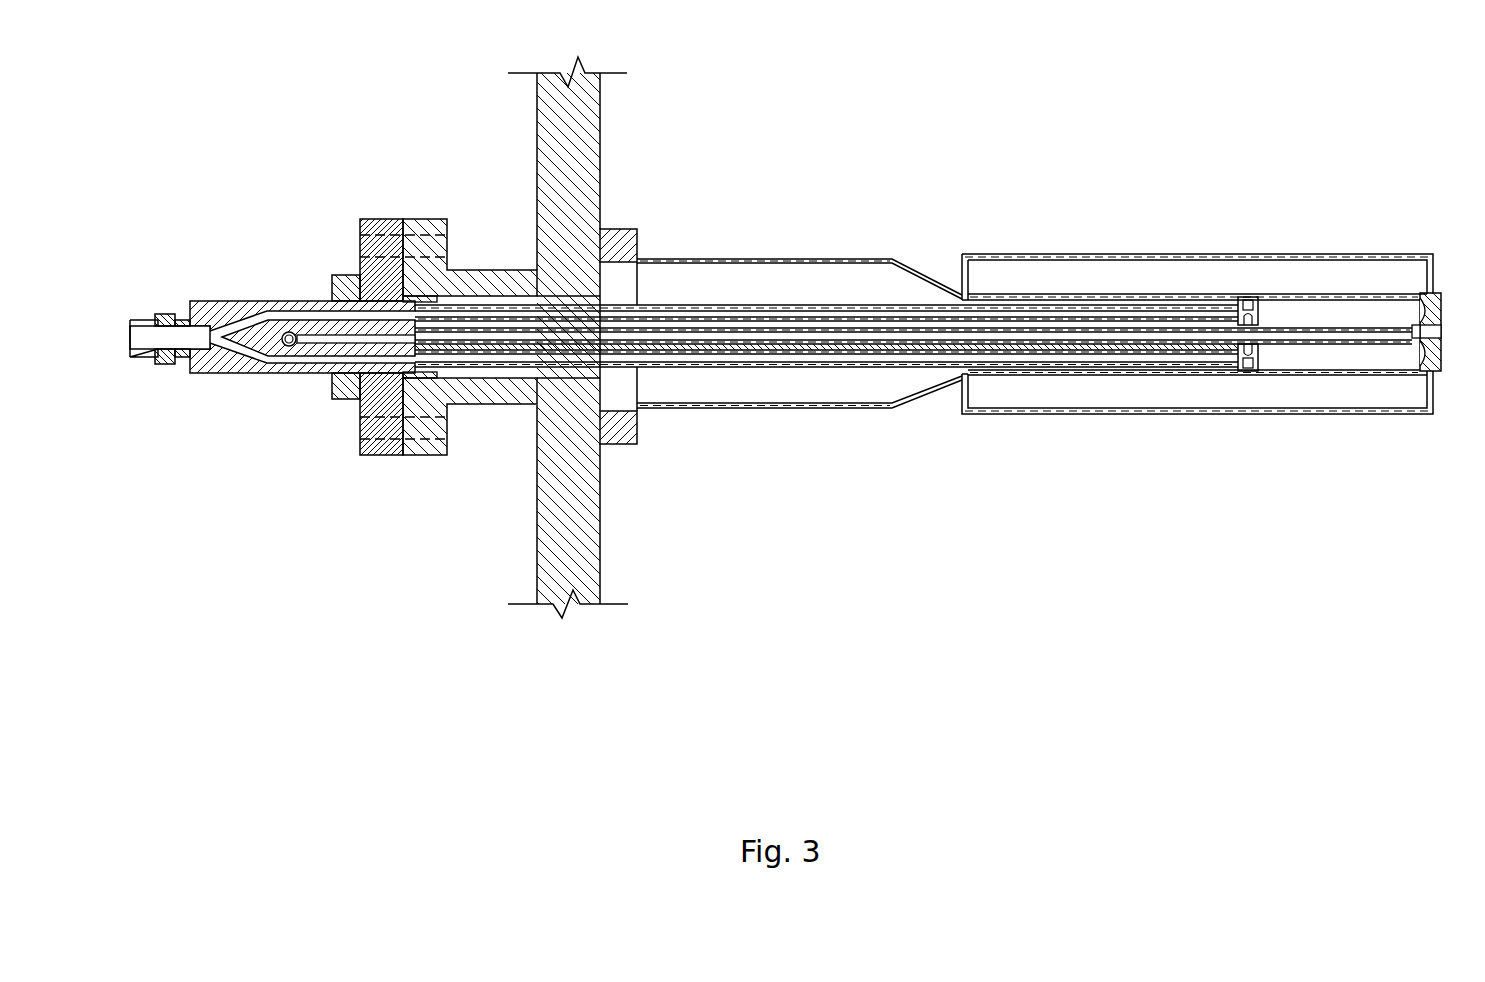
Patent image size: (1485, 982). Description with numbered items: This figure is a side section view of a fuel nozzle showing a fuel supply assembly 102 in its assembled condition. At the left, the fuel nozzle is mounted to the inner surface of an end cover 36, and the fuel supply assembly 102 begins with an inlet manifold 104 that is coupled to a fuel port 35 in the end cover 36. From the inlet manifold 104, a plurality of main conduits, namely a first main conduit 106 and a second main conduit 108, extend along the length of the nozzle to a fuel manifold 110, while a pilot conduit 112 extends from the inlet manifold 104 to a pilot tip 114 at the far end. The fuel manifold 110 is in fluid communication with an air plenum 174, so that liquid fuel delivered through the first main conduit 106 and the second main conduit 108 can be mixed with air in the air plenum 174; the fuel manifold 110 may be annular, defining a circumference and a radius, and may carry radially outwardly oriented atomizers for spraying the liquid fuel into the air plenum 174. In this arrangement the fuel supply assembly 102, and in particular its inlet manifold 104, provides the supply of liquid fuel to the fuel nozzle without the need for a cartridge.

The end cover 36 is at (580, 122).
The fuel port 35 is at (503, 268).
The inlet manifold 104 is at (322, 450).
The fuel supply assembly 102 is at (897, 177).
The second main conduit 108 is at (742, 313).
The first main conduit 106 is at (710, 358).
The pilot conduit 112 is at (1080, 338).
The fuel manifold 110 is at (1247, 371).
The air plenum 174 is at (1158, 270).
The pilot tip 114 is at (1427, 358).